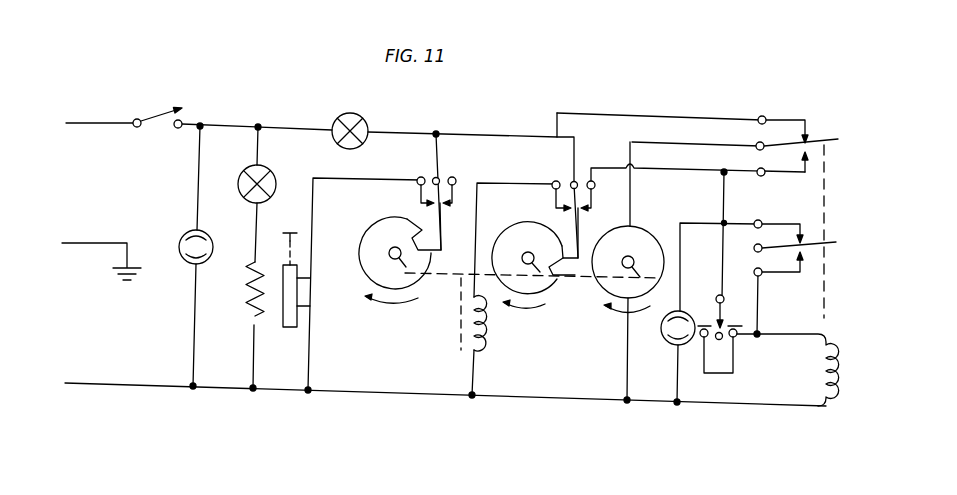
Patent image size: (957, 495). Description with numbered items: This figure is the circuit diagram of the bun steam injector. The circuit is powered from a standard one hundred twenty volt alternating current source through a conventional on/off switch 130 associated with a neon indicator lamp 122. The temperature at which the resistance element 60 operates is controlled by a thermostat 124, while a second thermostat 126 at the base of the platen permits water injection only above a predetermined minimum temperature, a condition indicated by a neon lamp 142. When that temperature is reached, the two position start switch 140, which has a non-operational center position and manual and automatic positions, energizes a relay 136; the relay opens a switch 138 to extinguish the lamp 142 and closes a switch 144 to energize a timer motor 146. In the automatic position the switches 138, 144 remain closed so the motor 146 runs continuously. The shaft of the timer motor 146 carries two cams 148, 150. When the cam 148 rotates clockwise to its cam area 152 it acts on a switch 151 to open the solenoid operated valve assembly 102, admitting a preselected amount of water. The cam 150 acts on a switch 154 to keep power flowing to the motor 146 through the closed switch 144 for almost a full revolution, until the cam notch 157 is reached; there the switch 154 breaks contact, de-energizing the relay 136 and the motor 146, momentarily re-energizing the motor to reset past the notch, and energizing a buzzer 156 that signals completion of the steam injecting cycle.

The on/off switch 130 is at (166, 101).
The thermostat 126 is at (356, 112).
The thermostat 124 is at (270, 180).
The neon indicator lamp 122 is at (181, 240).
The resistance element 60 is at (249, 304).
The valve assembly 102 is at (303, 286).
The cam 148 is at (376, 272).
The cam area 152 is at (426, 226).
The switch 151 is at (446, 178).
The cam 150 is at (526, 228).
The cam notch 157 is at (567, 284).
The switch 154 is at (584, 178).
The switch 144 is at (815, 151).
The timer motor 146 is at (613, 296).
The switch 138 is at (808, 256).
The buzzer 156 is at (482, 330).
The neon lamp 142 is at (664, 334).
The start switch 140 is at (718, 364).
The relay 136 is at (814, 369).